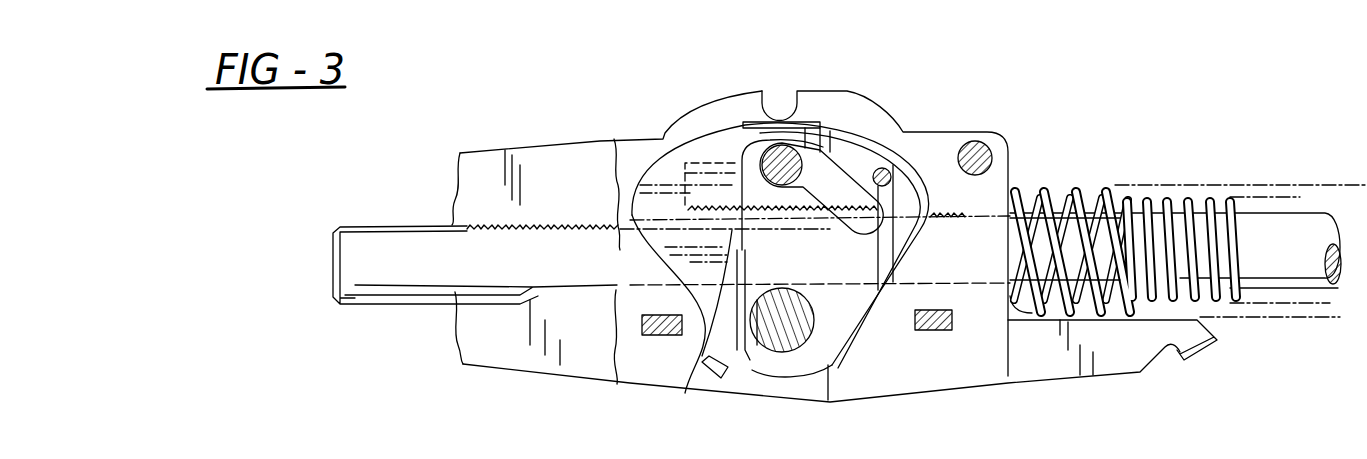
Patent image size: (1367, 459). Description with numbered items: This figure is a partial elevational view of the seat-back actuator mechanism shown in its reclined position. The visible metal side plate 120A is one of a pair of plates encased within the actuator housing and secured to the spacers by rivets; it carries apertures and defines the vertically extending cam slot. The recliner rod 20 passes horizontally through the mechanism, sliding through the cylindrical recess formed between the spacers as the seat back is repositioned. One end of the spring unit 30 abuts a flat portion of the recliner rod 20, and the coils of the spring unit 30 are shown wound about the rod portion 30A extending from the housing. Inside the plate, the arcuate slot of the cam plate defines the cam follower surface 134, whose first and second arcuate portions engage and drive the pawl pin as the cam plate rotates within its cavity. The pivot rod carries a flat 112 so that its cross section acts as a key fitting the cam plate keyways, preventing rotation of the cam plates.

The metal side plate 120A is at (598, 165).
The recliner rod 20 is at (354, 298).
The spring unit 30 is at (1066, 190).
The spring rod 30A is at (1190, 197).
The cam follower surface 134 is at (828, 174).
The flat 112 is at (775, 340).